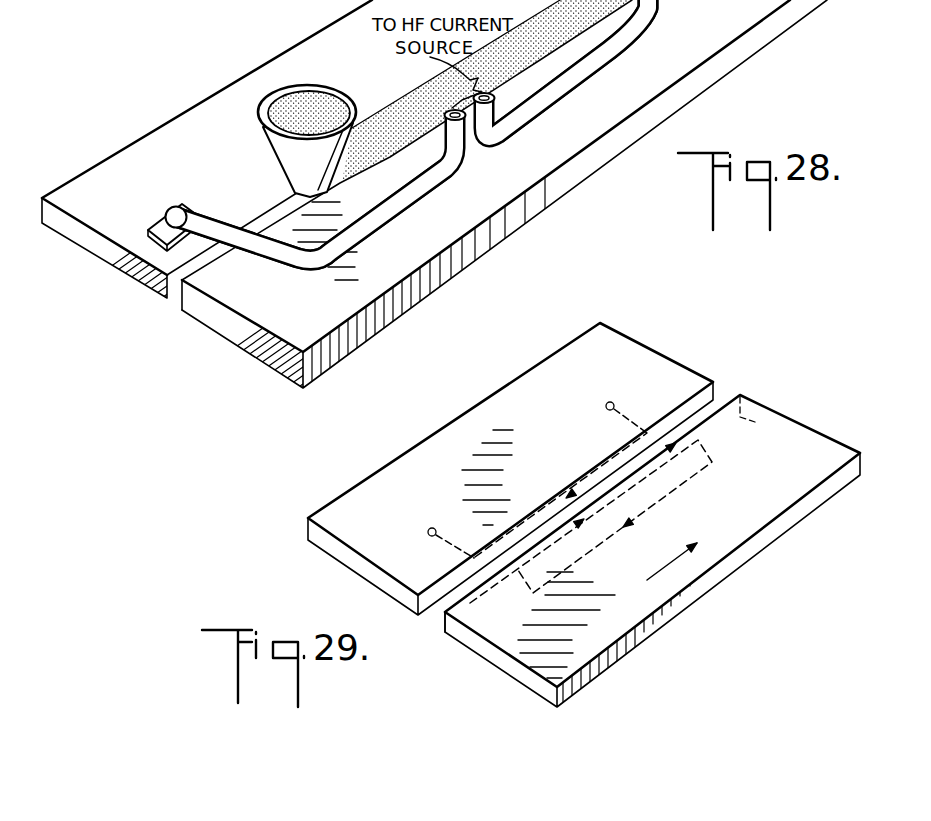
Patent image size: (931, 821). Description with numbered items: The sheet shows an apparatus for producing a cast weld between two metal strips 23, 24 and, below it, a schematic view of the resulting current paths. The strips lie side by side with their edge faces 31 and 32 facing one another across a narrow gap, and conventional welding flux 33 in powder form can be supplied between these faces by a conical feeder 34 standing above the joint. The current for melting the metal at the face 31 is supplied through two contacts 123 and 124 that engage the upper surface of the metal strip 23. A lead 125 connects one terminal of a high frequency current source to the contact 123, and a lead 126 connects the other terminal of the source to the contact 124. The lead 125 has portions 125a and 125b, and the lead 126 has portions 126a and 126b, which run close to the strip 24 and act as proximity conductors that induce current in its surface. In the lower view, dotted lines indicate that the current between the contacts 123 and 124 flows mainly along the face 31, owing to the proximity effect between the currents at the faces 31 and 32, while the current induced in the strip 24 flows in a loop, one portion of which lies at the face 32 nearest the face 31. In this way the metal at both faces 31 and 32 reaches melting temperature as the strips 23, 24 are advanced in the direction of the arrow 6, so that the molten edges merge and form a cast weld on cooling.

In FIG. 28, the metal strip 23 is at (132, 270).
In FIG. 29, the metal strip 23 is at (350, 560).
In FIG. 28, the metal strip 24 is at (257, 351).
In FIG. 29, the metal strip 24 is at (527, 677).
In FIG. 28, the face 31 is at (168, 299).
In FIG. 29, the face 31 is at (413, 608).
In FIG. 28, the face 32 is at (178, 314).
In FIG. 29, the face 32 is at (443, 620).
In FIG. 28, the welding flux 33 is at (265, 124).
In FIG. 28, the conical feeder 34 is at (292, 175).
In FIG. 28, the contact 123 is at (148, 230).
In FIG. 29, the contact 123 is at (431, 527).
In FIG. 29, the contact 124 is at (610, 402).
In FIG. 28, the lead 125 is at (458, 150).
In FIG. 28, the lead portion 125a is at (366, 224).
In FIG. 28, the lead portion 125b is at (270, 258).
In FIG. 28, the lead 126 is at (488, 112).
In FIG. 28, the lead portion 126a is at (612, 58).
In FIG. 28, the lead portion 126b is at (665, 8).
In FIG. 29, the arrow 6 is at (675, 560).